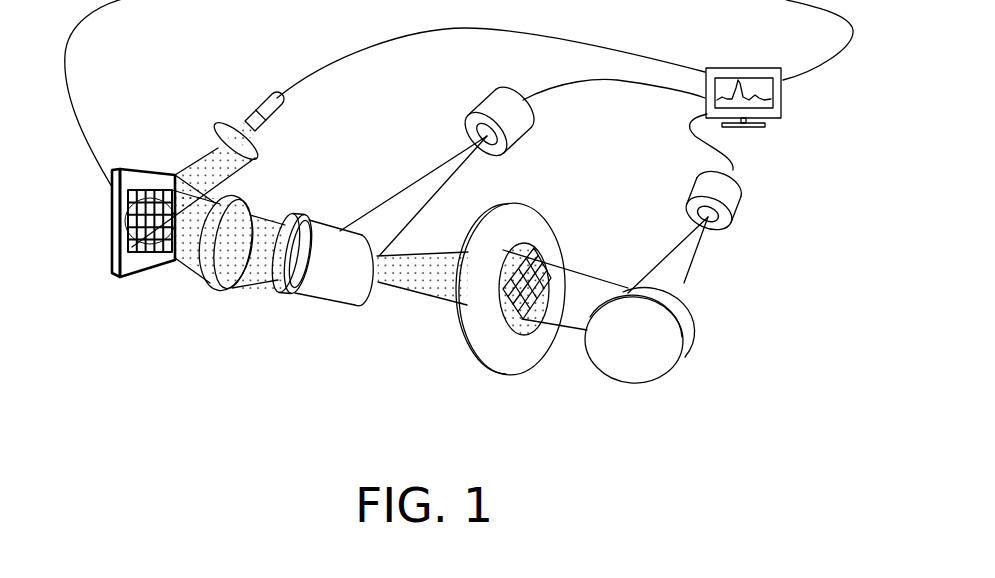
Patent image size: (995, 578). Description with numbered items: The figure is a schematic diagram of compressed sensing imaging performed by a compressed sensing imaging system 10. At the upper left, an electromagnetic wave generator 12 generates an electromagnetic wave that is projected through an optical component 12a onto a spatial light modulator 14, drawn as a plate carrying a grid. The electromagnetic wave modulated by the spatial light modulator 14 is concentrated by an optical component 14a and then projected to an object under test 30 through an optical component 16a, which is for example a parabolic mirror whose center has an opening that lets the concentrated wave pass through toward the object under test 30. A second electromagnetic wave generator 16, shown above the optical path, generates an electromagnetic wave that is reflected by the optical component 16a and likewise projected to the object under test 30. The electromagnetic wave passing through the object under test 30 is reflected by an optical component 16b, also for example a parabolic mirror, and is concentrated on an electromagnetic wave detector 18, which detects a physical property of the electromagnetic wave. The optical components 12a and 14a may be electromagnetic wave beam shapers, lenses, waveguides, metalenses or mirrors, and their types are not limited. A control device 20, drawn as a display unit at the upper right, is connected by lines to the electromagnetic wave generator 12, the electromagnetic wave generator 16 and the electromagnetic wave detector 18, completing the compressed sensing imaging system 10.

The compressed sensing imaging system 10 is at (797, 450).
The electromagnetic wave generator 12 is at (282, 105).
The optical component 12a is at (257, 153).
The spatial light modulator 14 is at (110, 250).
The optical component 14a is at (210, 292).
The electromagnetic wave generator 16 is at (511, 130).
The optical component 16a is at (283, 292).
The optical component 16b is at (687, 310).
The electromagnetic wave detector 18 is at (733, 200).
The control device 20 is at (784, 100).
The object under test 30 is at (515, 302).